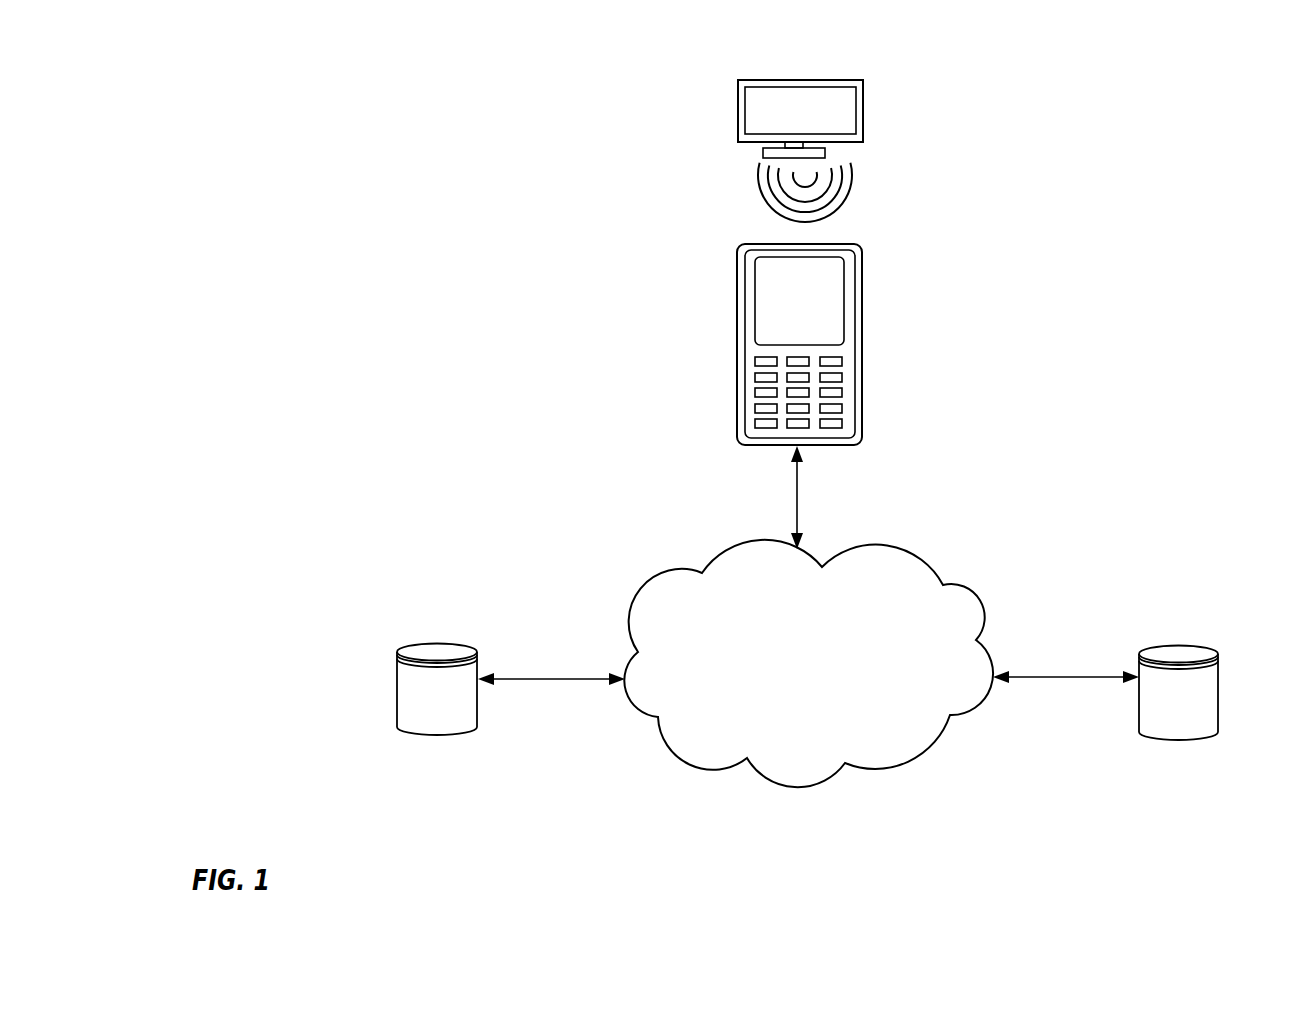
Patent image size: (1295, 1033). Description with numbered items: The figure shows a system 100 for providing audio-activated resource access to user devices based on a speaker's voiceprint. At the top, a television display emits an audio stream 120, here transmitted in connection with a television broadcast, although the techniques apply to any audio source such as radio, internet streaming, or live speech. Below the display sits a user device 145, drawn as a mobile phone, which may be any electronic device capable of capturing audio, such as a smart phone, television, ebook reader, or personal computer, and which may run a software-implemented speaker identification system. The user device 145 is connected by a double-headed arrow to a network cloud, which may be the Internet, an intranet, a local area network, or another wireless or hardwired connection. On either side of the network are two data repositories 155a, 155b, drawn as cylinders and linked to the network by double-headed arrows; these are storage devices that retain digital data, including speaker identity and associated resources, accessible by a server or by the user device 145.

The system 100 is at (413, 226).
The audio stream 120 is at (851, 199).
The user device 145 is at (860, 447).
The data repository 155a is at (438, 642).
The data repository 155b is at (1182, 644).